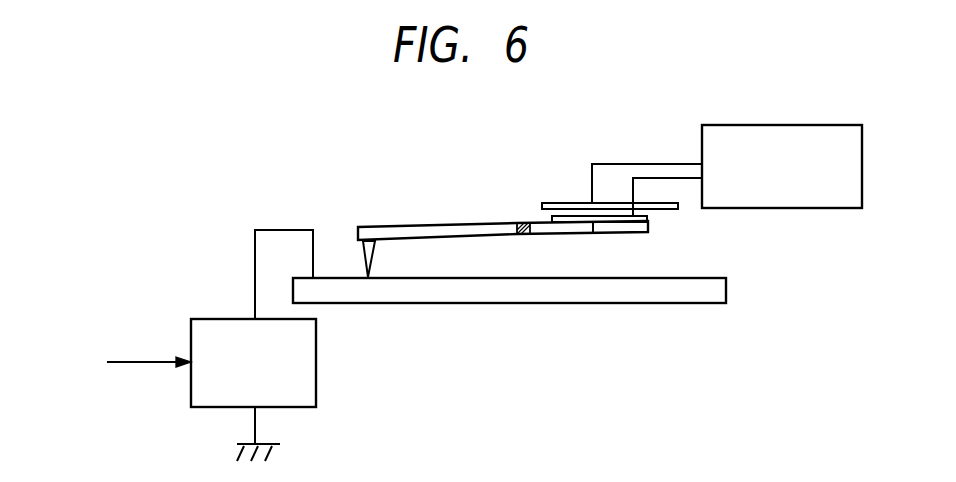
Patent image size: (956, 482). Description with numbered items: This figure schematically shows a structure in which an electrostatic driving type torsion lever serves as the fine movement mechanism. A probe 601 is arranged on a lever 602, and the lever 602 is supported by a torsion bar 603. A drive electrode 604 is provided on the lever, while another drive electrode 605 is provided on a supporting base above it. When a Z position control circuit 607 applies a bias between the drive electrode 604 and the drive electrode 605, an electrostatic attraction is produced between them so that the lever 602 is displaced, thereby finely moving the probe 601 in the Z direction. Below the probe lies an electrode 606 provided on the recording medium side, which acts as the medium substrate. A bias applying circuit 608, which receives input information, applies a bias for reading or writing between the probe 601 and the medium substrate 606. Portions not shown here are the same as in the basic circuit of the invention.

The probe 601 is at (363, 250).
The lever 602 is at (445, 227).
The torsion bar 603 is at (522, 223).
The drive electrode 604 is at (594, 222).
The drive electrode 605 is at (558, 203).
The electrode 606 is at (660, 303).
The Z position control circuit 607 is at (803, 125).
The bias applying circuit 608 is at (317, 368).